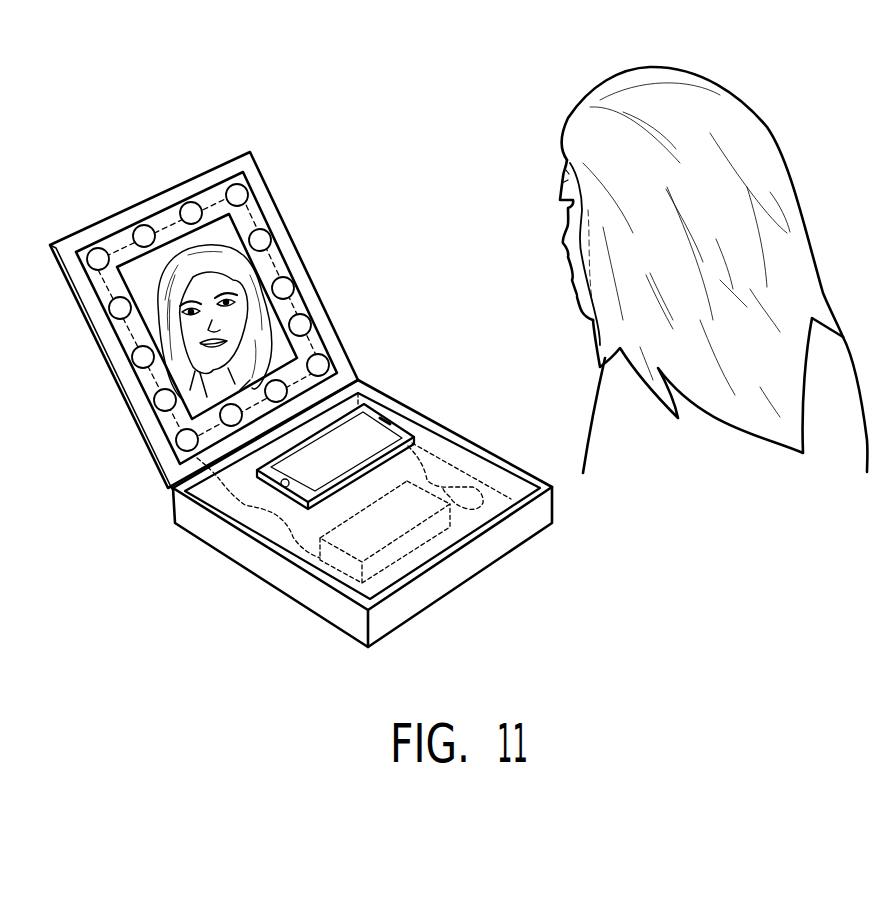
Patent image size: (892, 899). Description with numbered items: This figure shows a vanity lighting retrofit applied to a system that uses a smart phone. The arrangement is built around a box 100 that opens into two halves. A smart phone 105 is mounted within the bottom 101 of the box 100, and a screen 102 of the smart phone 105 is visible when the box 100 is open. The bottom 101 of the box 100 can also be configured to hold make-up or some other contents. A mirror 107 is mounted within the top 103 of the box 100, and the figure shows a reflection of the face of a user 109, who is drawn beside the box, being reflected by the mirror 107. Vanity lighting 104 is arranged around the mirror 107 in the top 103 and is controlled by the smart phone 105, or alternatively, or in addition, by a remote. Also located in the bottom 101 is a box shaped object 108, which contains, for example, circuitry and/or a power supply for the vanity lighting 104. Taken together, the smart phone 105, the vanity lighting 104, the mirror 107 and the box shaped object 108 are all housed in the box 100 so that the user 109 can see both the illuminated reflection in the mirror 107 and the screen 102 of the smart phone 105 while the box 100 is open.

The box 100 is at (399, 323).
The bottom 101 is at (512, 552).
The screen 102 is at (368, 455).
The top 103 is at (228, 162).
The vanity lighting 104 is at (183, 205).
The smart phone 105 is at (405, 432).
The mirror 107 is at (245, 220).
The box shaped object 108 is at (370, 543).
The user 109 is at (688, 65).